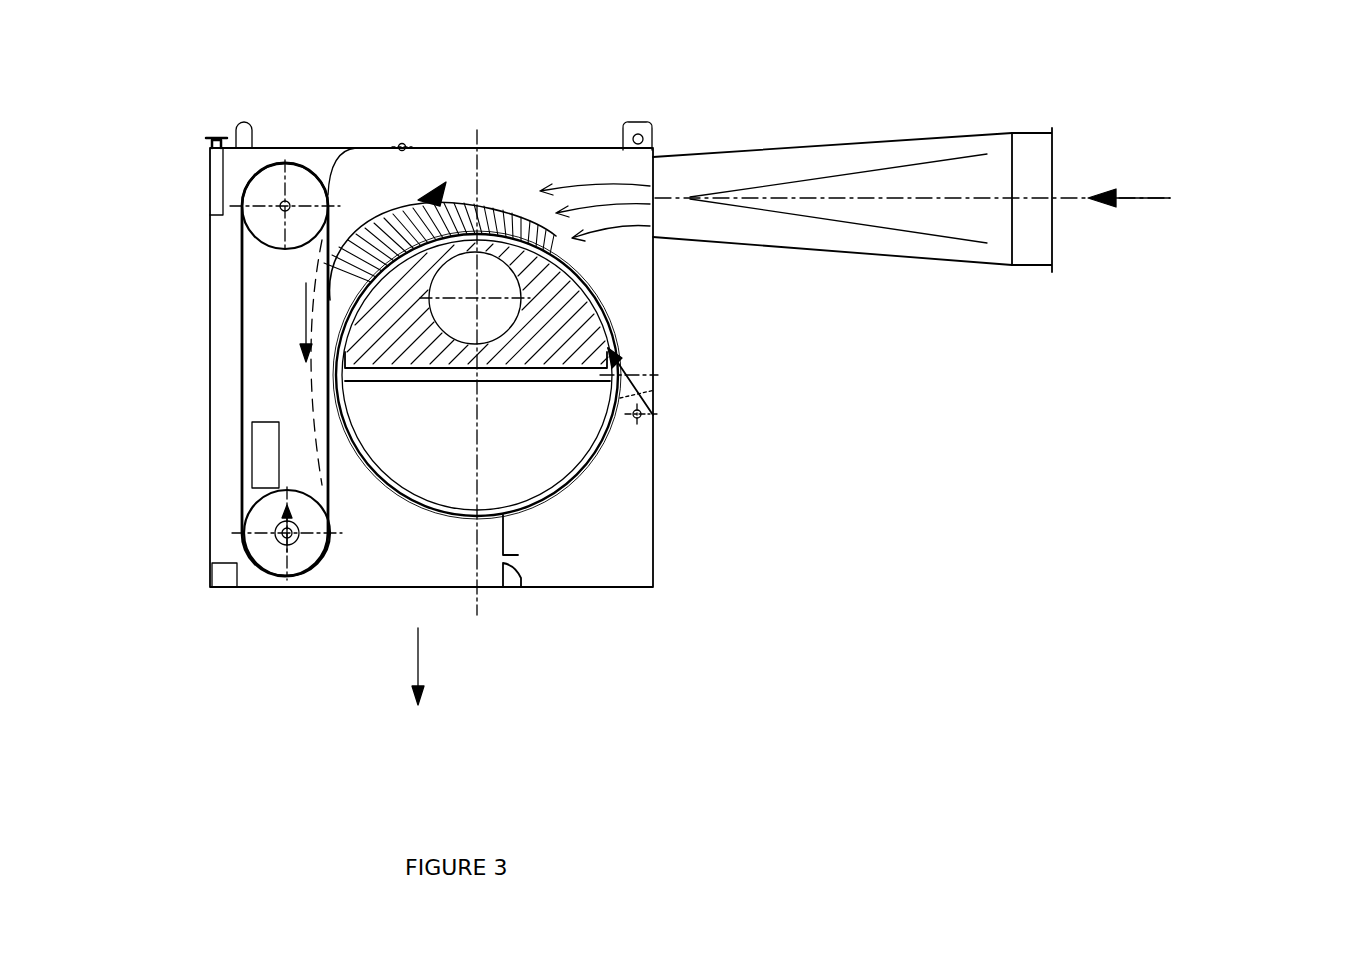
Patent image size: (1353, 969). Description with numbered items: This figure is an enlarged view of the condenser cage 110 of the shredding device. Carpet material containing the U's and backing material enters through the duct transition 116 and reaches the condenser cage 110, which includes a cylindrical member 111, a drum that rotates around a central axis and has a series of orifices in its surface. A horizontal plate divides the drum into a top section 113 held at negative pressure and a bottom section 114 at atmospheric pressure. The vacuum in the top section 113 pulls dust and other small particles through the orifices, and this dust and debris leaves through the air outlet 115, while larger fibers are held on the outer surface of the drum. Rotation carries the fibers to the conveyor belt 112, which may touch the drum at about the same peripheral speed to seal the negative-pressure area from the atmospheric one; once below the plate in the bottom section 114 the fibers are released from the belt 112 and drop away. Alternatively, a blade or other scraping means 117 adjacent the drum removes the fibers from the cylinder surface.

The condenser cage 110 is at (280, 140).
The cylindrical member 111 is at (655, 398).
The conveyor belt 112 is at (240, 366).
The top section 113 is at (592, 300).
The bottom section 114 is at (585, 477).
The air outlet 115 is at (475, 298).
The duct transition 116 is at (1032, 128).
The scraping means 117 is at (510, 535).